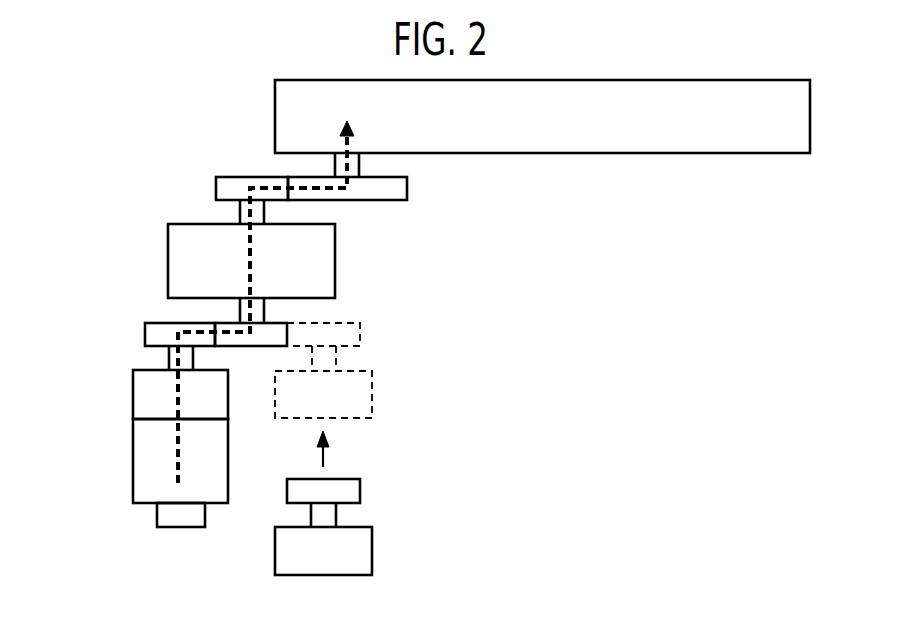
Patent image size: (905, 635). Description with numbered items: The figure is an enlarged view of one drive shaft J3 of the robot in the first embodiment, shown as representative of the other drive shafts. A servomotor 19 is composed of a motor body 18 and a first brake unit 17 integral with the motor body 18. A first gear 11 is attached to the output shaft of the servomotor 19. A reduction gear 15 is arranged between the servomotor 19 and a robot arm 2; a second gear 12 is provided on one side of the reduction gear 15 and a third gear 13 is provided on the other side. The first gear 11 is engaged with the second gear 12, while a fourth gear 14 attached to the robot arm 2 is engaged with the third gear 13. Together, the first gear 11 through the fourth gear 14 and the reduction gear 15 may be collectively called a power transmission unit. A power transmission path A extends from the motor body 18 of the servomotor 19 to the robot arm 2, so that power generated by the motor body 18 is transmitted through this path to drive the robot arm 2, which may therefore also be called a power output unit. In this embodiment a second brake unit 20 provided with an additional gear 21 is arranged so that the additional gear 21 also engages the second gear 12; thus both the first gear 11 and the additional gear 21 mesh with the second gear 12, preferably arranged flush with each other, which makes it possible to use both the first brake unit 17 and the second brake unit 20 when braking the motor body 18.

The robot arm 2 is at (725, 127).
The first gear 11 is at (158, 328).
The second gear 12 is at (272, 338).
The third gear 13 is at (230, 182).
The fourth gear 14 is at (407, 190).
The reduction gear 15 is at (185, 233).
The first brake unit 17 is at (220, 403).
The motor body 18 is at (220, 478).
The servomotor 19 is at (162, 448).
The second brake unit 20 is at (362, 553).
The additional gear 21 is at (354, 493).
The power transmission path A is at (252, 259).
The drive shaft J3 is at (517, 345).